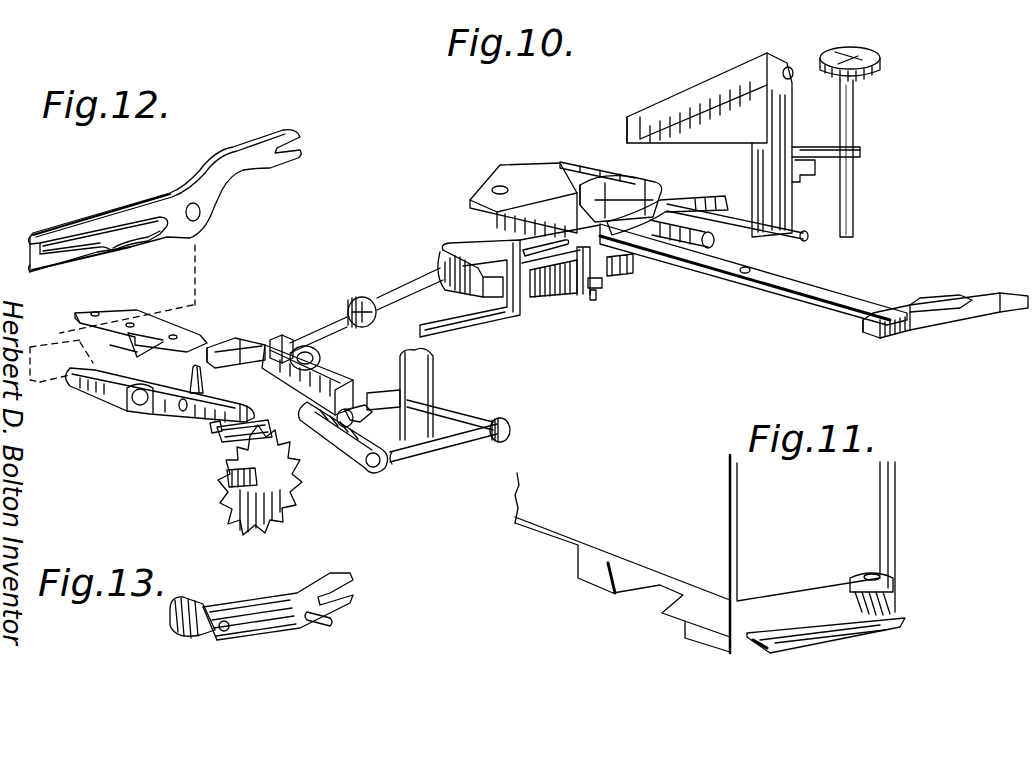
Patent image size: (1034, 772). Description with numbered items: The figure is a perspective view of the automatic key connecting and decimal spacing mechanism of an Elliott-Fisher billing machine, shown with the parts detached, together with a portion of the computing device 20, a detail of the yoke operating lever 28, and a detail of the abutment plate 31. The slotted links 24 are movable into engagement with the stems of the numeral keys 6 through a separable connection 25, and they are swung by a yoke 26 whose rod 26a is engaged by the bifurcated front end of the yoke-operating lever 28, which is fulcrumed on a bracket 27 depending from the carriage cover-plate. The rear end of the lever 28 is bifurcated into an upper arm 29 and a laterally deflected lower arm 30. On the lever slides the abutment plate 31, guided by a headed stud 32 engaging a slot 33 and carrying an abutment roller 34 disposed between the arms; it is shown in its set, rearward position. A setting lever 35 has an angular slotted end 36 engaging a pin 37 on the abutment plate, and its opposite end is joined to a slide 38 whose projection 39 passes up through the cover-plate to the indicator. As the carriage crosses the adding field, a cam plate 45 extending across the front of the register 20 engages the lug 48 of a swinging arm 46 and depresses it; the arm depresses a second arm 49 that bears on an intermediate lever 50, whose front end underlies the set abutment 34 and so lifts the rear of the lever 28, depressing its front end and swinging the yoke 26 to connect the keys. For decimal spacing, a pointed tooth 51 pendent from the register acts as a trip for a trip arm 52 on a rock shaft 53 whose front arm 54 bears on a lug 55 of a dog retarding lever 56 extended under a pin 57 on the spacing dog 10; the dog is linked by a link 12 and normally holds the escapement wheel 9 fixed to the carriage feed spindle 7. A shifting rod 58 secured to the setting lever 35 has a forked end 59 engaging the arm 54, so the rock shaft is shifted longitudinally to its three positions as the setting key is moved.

In FIG. 10, the numeral keys 6 is at (876, 55).
In FIG. 10, the carriage feed spindle 7 is at (225, 482).
In FIG. 10, the escapement wheel 9 is at (282, 508).
In FIG. 10, the spacing dog 10 is at (160, 407).
In FIG. 10, the link 12 is at (202, 378).
In FIG. 11, the computing device 20 is at (705, 554).
In FIG. 10, the computing device 20 is at (198, 305).
In FIG. 10, the slotted links 24 is at (790, 130).
In FIG. 10, the separable connection 25 is at (807, 177).
In FIG. 10, the yoke 26 is at (550, 178).
In FIG. 10, the rod 26a is at (832, 205).
In FIG. 10, the bracket 27 is at (494, 185).
In FIG. 12, the yoke-operating lever 28 is at (197, 178).
In FIG. 10, the yoke-operating lever 28 is at (670, 200).
In FIG. 12, the upper arm 29 is at (60, 232).
In FIG. 10, the upper arm 29 is at (466, 250).
In FIG. 12, the lower arm 30 is at (68, 270).
In FIG. 13, the abutment plate 31 is at (268, 625).
In FIG. 10, the abutment plate 31 is at (553, 285).
In FIG. 10, the headed stud 32 is at (622, 275).
In FIG. 10, the slot 33 is at (600, 290).
In FIG. 13, the abutment roller 34 is at (182, 626).
In FIG. 10, the abutment roller 34 is at (418, 283).
In FIG. 10, the setting lever 35 is at (685, 260).
In FIG. 10, the angular slotted end 36 is at (585, 295).
In FIG. 13, the pin 37 is at (330, 620).
In FIG. 10, the pin 37 is at (595, 300).
In FIG. 10, the slide 38 is at (957, 322).
In FIG. 10, the projection 39 is at (970, 295).
In FIG. 11, the cam plate 45 is at (838, 632).
In FIG. 10, the cam plate 45 is at (160, 322).
In FIG. 10, the swinging arm 46 is at (330, 375).
In FIG. 10, the lug 48 is at (240, 345).
In FIG. 10, the second arm 49 is at (282, 335).
In FIG. 10, the intermediate lever 50 is at (388, 302).
In FIG. 10, the pointed tooth 51 is at (128, 340).
In FIG. 10, the trip arm 52 is at (348, 462).
In FIG. 10, the rock shaft 53 is at (440, 450).
In FIG. 10, the arm 54 is at (380, 392).
In FIG. 10, the lug 55 is at (372, 414).
In FIG. 10, the dog retarding lever 56 is at (222, 436).
In FIG. 10, the pin 57 is at (212, 426).
In FIG. 10, the shifting rod 58 is at (467, 322).
In FIG. 10, the fork 59 is at (410, 460).